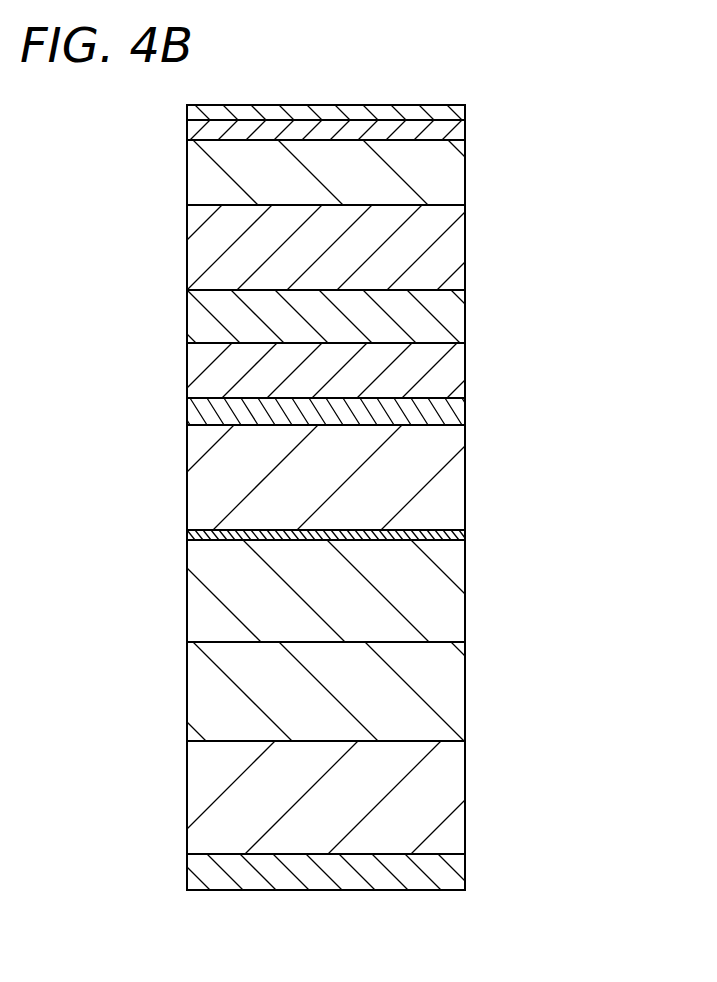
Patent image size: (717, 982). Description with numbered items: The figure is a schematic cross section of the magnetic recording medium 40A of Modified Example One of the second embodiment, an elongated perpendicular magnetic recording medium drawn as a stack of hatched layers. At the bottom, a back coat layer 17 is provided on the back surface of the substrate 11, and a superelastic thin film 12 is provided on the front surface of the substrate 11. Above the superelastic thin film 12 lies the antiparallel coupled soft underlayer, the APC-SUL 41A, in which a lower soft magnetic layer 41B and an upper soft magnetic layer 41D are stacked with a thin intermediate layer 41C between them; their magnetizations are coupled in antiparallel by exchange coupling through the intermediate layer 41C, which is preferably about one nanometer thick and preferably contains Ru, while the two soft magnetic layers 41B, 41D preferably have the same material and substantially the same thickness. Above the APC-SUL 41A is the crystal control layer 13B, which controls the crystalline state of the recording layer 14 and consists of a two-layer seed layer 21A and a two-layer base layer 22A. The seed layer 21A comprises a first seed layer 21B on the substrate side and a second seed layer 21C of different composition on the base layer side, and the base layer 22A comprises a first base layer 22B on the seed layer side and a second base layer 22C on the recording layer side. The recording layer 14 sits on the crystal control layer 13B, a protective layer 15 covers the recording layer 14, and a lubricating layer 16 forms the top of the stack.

The magnetic recording medium 40A is at (433, 86).
The lubricating layer 16 is at (460, 112).
The protective layer 15 is at (460, 133).
The recording layer 14 is at (455, 172).
The crystal control layer 13B is at (630, 270).
The base layer 22A is at (553, 237).
The second base layer 22C is at (457, 247).
The first base layer 22B is at (457, 315).
The seed layer 21A is at (553, 362).
The second seed layer 21C is at (457, 370).
The first seed layer 21B is at (457, 412).
The antiparallel coupled SUL 41A is at (553, 455).
The soft magnetic layer 41D is at (457, 463).
The intermediate layer 41C is at (457, 535).
The soft magnetic layer 41B is at (457, 600).
The superelastic thin film 12 is at (455, 690).
The substrate 11 is at (465, 798).
The back coat layer 17 is at (455, 870).